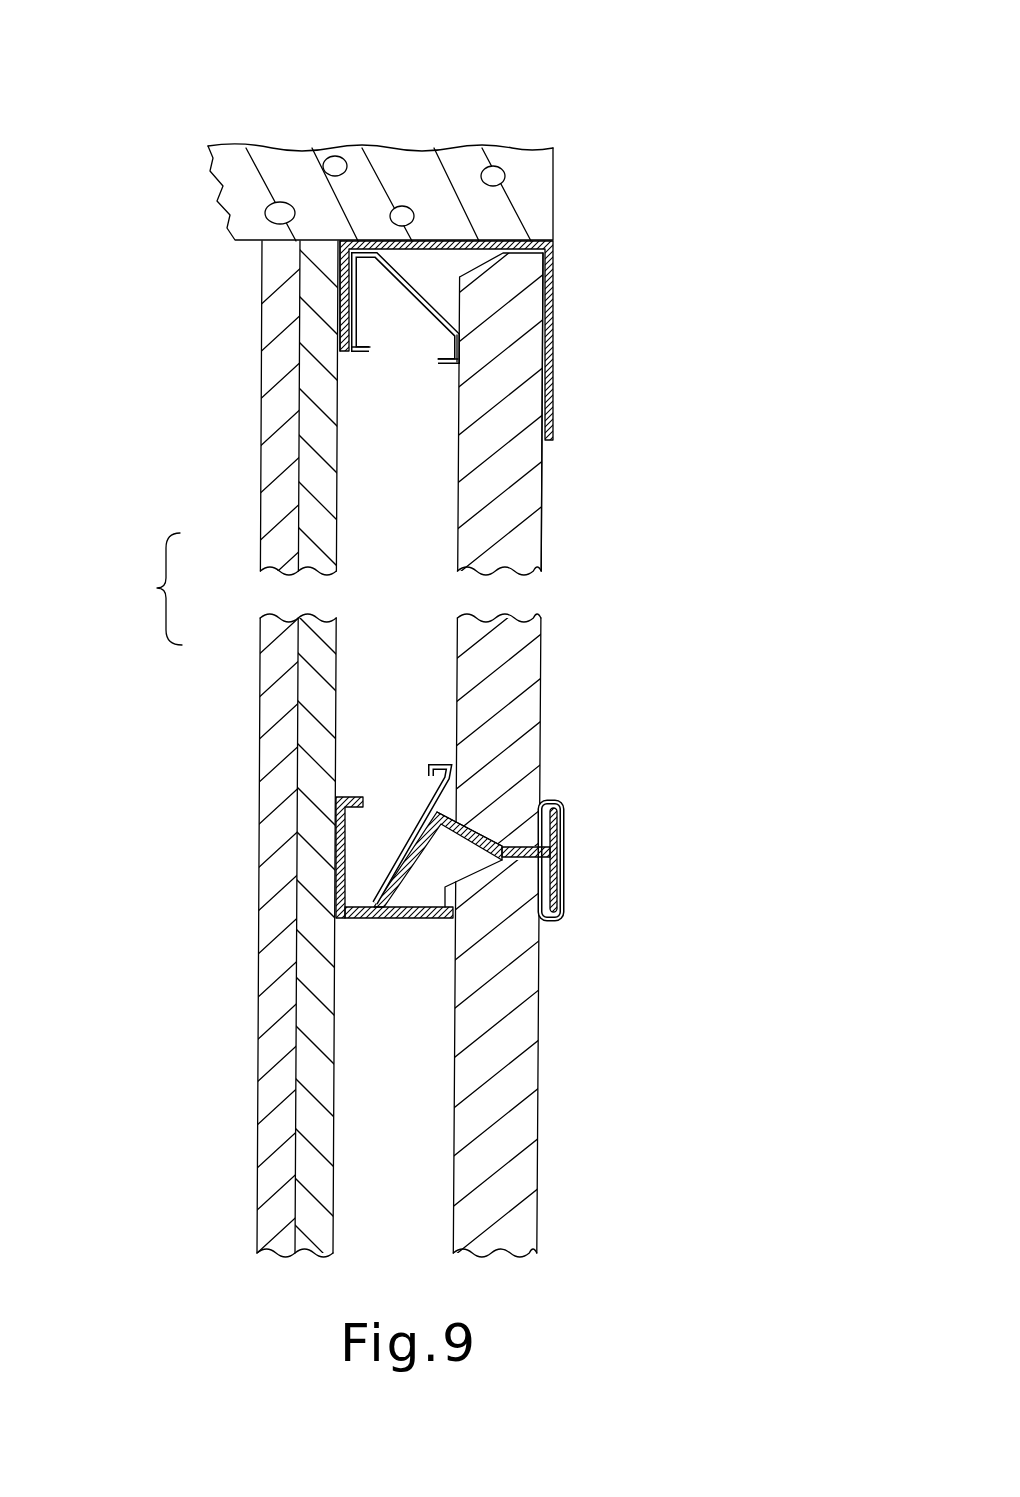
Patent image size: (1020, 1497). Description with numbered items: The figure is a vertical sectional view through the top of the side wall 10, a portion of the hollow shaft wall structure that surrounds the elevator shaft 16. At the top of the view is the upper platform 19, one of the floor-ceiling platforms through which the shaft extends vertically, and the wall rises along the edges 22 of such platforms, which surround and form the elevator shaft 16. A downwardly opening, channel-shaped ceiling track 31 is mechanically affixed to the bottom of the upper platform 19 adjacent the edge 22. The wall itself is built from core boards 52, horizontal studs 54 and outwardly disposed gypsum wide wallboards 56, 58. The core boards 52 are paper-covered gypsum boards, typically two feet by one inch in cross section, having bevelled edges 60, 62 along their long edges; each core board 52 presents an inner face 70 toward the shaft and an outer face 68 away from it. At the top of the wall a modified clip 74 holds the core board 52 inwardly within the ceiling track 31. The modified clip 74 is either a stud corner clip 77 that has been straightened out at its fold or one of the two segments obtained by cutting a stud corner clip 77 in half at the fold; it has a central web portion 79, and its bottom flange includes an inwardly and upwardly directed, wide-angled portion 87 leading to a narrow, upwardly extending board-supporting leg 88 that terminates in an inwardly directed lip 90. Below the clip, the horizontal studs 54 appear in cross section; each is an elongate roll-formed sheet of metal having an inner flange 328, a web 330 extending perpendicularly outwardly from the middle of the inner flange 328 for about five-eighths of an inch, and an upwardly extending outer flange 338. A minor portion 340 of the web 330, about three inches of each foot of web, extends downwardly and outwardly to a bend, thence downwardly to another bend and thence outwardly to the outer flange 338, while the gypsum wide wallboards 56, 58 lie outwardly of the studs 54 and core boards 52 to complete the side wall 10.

The side wall 10 is at (702, 74).
The elevator shaft 16 is at (627, 166).
The upper platform 19 is at (323, 148).
The edges of floor-ceiling platforms 22 is at (553, 195).
The ceiling track 31 is at (553, 288).
The core board 52 is at (542, 498).
The horizontal stud 54 is at (562, 862).
The gypsum wide wallboard 56 is at (295, 1033).
The gypsum wide wallboard 58 is at (258, 1083).
The bevelled edge 60 is at (540, 773).
The bevelled edge 62 is at (452, 889).
The outer face 68 is at (453, 1217).
The inner face 70 is at (541, 528).
The modified clip 74 is at (347, 345).
The stud corner clip 77 is at (432, 765).
The central web portion 79 is at (340, 332).
The wide-angled portion 87 is at (407, 272).
The board-supporting leg 88 is at (450, 352).
The inwardly directed lip 90 is at (450, 367).
The inner flange 328 is at (562, 820).
The web 330 is at (408, 846).
The outer flange 338 is at (337, 860).
The minor portion of web 340 is at (418, 920).